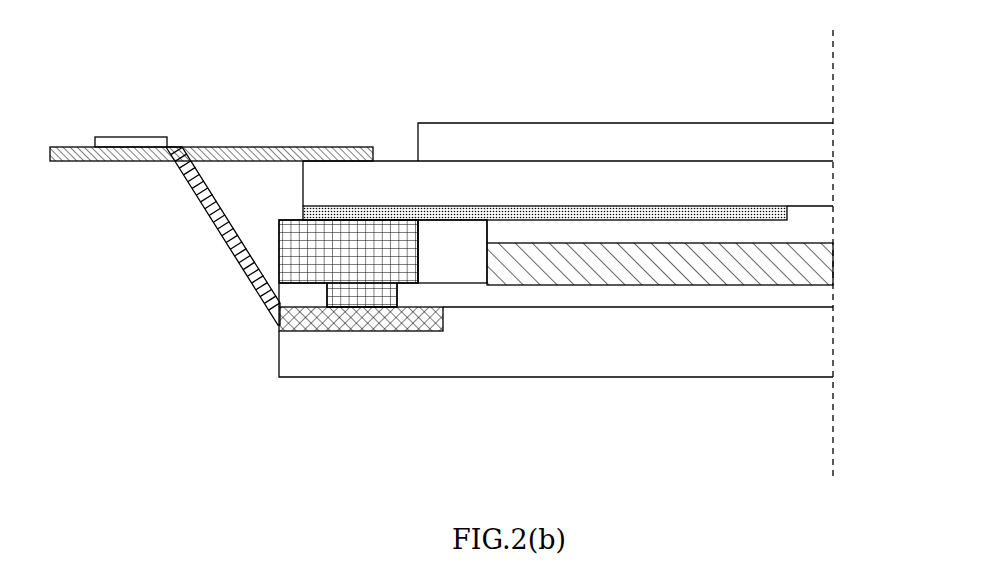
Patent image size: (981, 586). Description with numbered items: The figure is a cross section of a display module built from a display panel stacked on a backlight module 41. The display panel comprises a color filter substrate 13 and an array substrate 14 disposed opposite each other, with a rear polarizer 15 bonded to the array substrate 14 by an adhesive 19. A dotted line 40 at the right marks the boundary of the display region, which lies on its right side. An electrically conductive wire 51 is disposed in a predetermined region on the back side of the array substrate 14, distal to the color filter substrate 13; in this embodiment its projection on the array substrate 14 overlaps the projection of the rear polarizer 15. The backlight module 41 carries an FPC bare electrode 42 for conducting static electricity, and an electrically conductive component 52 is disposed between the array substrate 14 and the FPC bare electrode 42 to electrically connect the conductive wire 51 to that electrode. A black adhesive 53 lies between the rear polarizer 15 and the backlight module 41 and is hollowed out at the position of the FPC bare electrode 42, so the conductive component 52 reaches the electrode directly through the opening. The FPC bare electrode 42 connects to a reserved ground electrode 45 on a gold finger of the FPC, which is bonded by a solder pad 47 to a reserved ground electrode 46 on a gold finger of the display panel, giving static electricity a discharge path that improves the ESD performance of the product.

The color filter substrate 13 is at (833, 146).
The array substrate 14 is at (833, 184).
The rear polarizer 15 is at (833, 268).
The adhesive 19 is at (833, 232).
The dotted line 40 is at (833, 48).
The backlight module 41 is at (510, 377).
The FPC bare electrode 42 is at (302, 331).
The reserved ground electrode on a gold finger of the FPC 45 is at (198, 213).
The reserved ground electrode on a gold finger of the display panel 46 is at (253, 147).
The solder pad 47 is at (120, 137).
The electrically conductive wire 51 is at (383, 207).
The electrically conductive component 52 is at (368, 288).
The black adhesive 53 is at (630, 307).